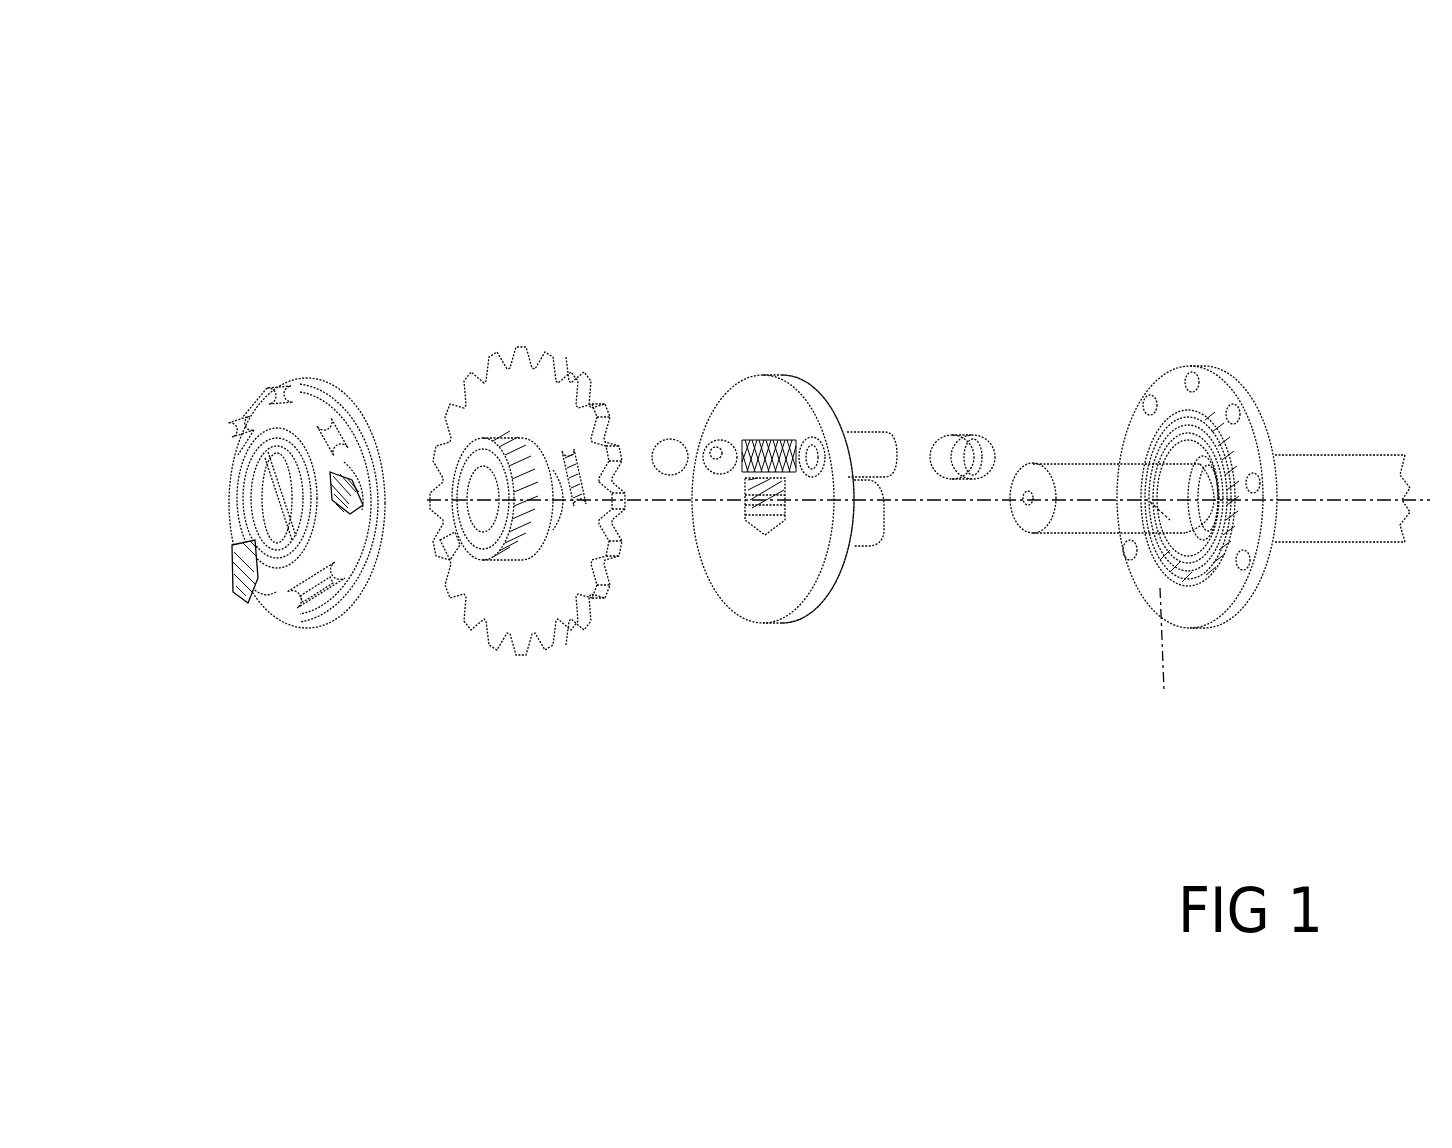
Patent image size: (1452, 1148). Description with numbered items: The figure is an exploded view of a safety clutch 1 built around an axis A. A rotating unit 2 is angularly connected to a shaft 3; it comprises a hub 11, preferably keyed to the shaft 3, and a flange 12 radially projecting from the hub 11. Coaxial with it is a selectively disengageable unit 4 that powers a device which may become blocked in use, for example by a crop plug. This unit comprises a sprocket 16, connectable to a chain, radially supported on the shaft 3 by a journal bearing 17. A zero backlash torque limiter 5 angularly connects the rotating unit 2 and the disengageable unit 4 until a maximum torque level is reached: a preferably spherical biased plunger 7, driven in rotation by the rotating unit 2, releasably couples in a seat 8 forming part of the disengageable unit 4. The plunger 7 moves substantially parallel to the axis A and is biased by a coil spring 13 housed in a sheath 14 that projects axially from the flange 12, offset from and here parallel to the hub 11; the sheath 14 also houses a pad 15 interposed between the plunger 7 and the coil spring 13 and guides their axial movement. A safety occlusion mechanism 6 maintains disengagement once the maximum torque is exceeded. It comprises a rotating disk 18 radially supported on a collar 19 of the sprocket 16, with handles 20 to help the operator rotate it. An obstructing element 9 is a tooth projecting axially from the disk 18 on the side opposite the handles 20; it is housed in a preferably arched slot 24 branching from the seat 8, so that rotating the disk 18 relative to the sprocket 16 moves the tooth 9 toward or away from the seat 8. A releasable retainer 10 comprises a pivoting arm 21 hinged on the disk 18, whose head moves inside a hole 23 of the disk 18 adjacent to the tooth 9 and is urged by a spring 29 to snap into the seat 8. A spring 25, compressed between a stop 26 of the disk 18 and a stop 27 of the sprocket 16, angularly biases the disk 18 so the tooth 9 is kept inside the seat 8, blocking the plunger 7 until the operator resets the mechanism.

The safety clutch 1 is at (817, 210).
The rotating unit 2 is at (673, 795).
The shaft 3 is at (1345, 478).
The selectively disengageable unit 4 is at (425, 795).
The zero backlash torque limiter 5 is at (567, 313).
The safety occlusion mechanism 6 is at (190, 145).
The biased plunger 7 is at (665, 473).
The seat 8 is at (568, 441).
The obstructing element 9 is at (380, 487).
The releasable retainer 10 is at (328, 483).
The hub 11 is at (870, 527).
The flange 12 is at (784, 612).
The coil spring 13 is at (755, 442).
The sheath 14 is at (873, 437).
The pad 15 is at (717, 463).
The sprocket 16 is at (520, 620).
The journal bearing 17 is at (486, 468).
The rotating disk 18 is at (240, 457).
The collar 19 is at (543, 518).
The handles 20 is at (276, 394).
The pivoting arm 21 is at (328, 455).
The hole 23 is at (350, 441).
The slot 24 is at (583, 510).
The spring 25 is at (243, 570).
The stop 26 is at (261, 592).
The stop 27 is at (447, 545).
The spring 29 is at (352, 478).
The axis A is at (1166, 657).